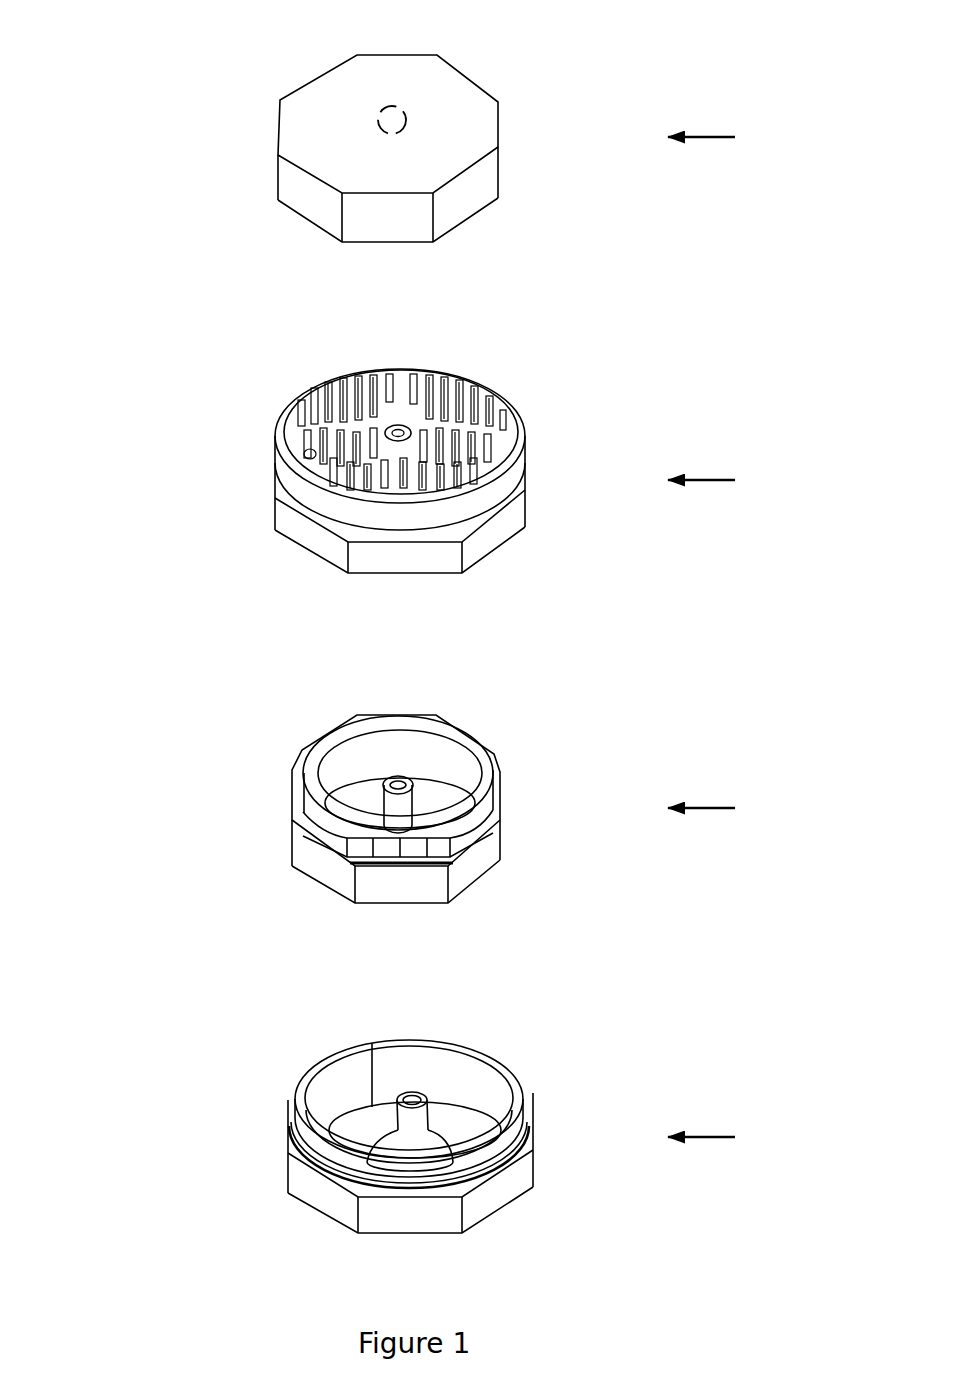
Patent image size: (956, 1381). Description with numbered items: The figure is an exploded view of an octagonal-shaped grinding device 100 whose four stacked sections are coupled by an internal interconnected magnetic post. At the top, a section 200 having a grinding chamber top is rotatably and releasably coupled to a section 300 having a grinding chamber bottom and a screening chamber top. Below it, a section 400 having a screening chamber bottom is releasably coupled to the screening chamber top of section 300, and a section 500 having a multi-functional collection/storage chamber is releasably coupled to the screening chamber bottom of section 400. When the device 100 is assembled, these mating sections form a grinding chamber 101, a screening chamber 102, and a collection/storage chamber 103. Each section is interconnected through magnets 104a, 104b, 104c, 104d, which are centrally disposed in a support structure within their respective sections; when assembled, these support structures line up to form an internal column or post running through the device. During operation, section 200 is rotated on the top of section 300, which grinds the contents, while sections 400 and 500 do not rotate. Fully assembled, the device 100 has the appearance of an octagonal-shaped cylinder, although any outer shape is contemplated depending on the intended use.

The grinding device 100 is at (182, 28).
The grinding chamber 101 is at (392, 346).
The screening chamber 102 is at (380, 690).
The collection/storage chamber 103 is at (380, 1008).
The magnet 104a is at (372, 102).
The magnet 104b is at (394, 428).
The magnet 104c is at (397, 781).
The magnet 104d is at (403, 1099).
The section having a grinding chamber top 200 is at (760, 137).
The section having a grinding chamber bottom and a screening chamber top 300 is at (760, 480).
The section having a screening chamber bottom 400 is at (760, 808).
The section having a collection/storage chamber 500 is at (760, 1137).